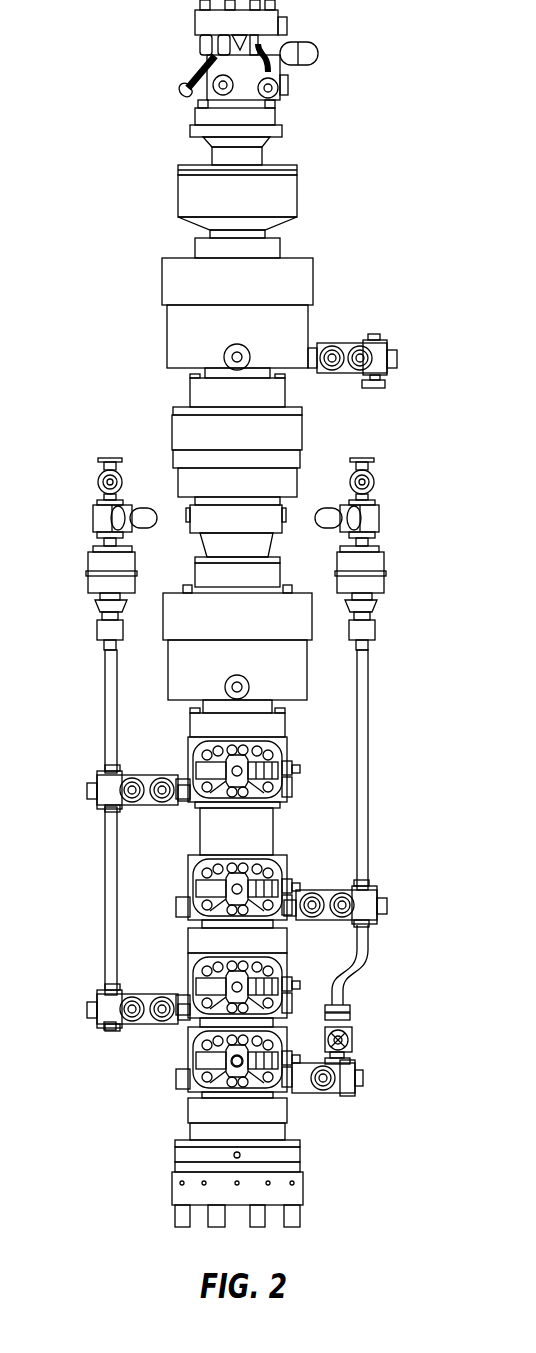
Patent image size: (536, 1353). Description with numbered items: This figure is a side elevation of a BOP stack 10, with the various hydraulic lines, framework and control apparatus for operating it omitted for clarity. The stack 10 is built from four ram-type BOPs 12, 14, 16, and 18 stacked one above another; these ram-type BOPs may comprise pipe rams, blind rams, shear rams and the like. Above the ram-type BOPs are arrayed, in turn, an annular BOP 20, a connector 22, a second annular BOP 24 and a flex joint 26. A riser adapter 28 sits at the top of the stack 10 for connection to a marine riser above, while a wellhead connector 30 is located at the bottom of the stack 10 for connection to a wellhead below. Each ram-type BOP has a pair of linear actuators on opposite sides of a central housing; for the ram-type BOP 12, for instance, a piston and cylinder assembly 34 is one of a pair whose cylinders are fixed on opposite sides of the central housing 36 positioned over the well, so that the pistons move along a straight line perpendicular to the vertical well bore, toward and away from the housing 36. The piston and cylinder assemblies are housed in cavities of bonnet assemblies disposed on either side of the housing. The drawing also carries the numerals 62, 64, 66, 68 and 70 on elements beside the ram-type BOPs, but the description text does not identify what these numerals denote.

The BOP stack 10 is at (408, 40).
The ram-type BOP 12 is at (190, 1045).
The ram-type BOP 14 is at (195, 967).
The ram-type BOP 16 is at (198, 860).
The ram-type BOP 18 is at (280, 805).
The annular BOP 20 is at (295, 665).
The connector 22 is at (185, 437).
The second annular BOP 24 is at (183, 342).
The flex joint 26 is at (190, 202).
The riser adapter 28 is at (200, 46).
The wellhead connector 30 is at (185, 1195).
The piston and cylinder assembly 34 is at (235, 1058).
The central housing 36 is at (352, 1043).
The hydraulic actuator 62 is at (298, 792).
The right hydraulic line 64 is at (370, 765).
The lower actuator 66 is at (322, 1090).
The left hydraulic line 68 is at (103, 705).
The actuator 70 is at (152, 995).